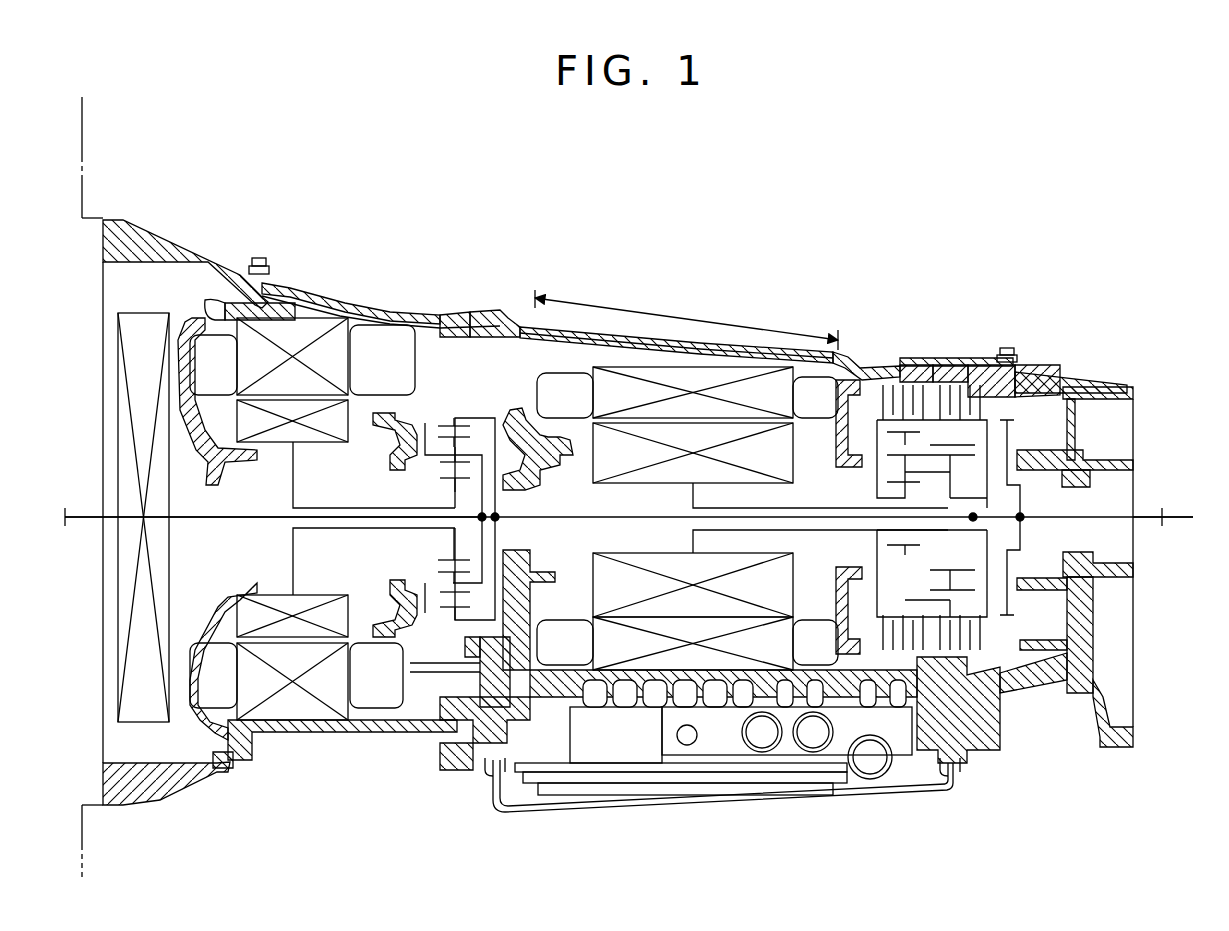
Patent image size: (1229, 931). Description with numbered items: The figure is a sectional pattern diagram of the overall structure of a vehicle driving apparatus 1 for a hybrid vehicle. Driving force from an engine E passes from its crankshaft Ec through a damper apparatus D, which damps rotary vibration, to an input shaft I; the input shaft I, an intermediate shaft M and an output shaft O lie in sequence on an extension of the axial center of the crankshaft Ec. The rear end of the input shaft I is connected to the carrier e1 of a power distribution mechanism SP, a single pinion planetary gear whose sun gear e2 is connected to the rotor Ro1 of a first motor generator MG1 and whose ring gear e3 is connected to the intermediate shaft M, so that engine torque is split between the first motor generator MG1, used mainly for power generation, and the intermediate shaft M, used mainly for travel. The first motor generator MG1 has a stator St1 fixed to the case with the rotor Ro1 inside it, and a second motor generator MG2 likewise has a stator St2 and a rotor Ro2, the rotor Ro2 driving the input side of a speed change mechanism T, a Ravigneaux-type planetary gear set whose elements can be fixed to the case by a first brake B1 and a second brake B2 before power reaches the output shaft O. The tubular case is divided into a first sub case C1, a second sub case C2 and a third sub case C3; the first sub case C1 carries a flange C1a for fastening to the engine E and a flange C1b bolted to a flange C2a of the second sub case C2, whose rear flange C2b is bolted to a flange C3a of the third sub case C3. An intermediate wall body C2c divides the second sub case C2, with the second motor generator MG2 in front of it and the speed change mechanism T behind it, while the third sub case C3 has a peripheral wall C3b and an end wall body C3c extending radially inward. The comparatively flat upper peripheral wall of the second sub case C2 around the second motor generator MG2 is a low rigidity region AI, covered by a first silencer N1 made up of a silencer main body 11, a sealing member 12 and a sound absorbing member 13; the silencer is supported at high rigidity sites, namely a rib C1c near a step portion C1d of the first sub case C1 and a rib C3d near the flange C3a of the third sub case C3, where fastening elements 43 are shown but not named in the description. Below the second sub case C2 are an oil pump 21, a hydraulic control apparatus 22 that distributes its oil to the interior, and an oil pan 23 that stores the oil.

The vehicle driving apparatus 1 is at (745, 203).
The engine E is at (82, 128).
The crankshaft Ec is at (82, 522).
The damper apparatus D is at (118, 390).
The input shaft I is at (273, 515).
The output shaft O is at (1162, 524).
The intermediate shaft M is at (567, 523).
The speed change mechanism T is at (1027, 608).
The first motor generator MG1 is at (290, 704).
The second motor generator MG2 is at (642, 365).
The stator St1 is at (365, 703).
The stator St2 is at (655, 665).
The rotor Ro1 is at (323, 597).
The rotor Ro2 is at (597, 460).
The power distribution mechanism SP is at (478, 405).
The carrier e1 is at (432, 460).
The sun gear e2 is at (447, 548).
The ring gear e3 is at (443, 418).
The first silencer N1 is at (589, 321).
The low rigidity region AI is at (686, 320).
The first sub case C1 is at (222, 772).
The flange C1a is at (112, 220).
The flange C1b is at (447, 312).
The rib C1c is at (313, 303).
The step portion C1d is at (265, 290).
The second sub case C2 is at (740, 347).
The flange C2a is at (487, 312).
The flange C2b is at (957, 363).
The intermediate wall body C2c is at (842, 582).
The third sub case C3 is at (1027, 692).
The flange C3a is at (977, 358).
The peripheral wall C3b is at (1050, 372).
The end wall body C3c is at (1083, 430).
The rib C3d is at (1077, 375).
The first brake B1 is at (850, 400).
The second brake B2 is at (963, 638).
The silencer main body 11 is at (377, 307).
The sealing member 12 is at (278, 295).
The sound absorbing member 13 is at (405, 328).
The oil pump 21 is at (445, 722).
The hydraulic control apparatus 22 is at (708, 747).
The oil pan 23 is at (600, 813).
The bolt 43 is at (257, 258).